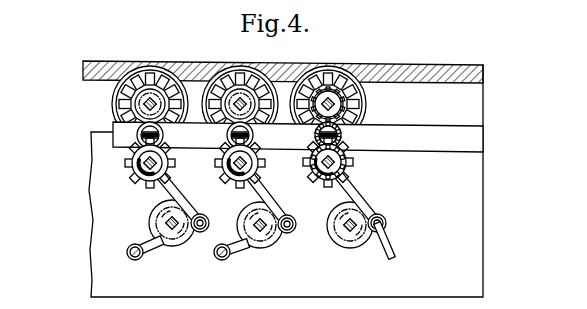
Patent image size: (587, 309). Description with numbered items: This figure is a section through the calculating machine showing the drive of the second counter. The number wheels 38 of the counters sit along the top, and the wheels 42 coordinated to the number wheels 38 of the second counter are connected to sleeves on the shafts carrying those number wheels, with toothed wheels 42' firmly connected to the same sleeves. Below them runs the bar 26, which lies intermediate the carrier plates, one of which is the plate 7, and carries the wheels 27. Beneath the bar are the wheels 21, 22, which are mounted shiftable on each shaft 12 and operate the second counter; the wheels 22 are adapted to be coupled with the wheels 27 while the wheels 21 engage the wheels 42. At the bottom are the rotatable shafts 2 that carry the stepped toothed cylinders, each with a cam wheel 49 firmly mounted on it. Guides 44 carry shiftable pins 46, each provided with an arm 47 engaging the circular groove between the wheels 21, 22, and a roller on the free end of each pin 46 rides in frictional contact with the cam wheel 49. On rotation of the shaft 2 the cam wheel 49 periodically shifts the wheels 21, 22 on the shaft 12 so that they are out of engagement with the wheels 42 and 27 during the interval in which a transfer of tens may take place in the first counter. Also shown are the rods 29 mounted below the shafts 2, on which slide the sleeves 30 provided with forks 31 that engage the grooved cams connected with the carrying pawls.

The rotatable shaft 2 is at (170, 228).
The plate 7 is at (472, 250).
The shaft 12 is at (178, 196).
The wheel 21 is at (130, 185).
The wheel 22 is at (128, 158).
The bar 26 is at (447, 145).
The wheel 27 is at (113, 135).
The rod 29 is at (235, 260).
The sleeve 30 is at (222, 260).
The fork 31 is at (145, 240).
The number wheel 38 is at (113, 90).
The wheel 42 is at (261, 90).
The toothed wheel 42' is at (217, 80).
The guide 44 is at (386, 229).
The shiftable pin 46 is at (385, 243).
The arm 47 is at (268, 197).
The cam wheel 49 is at (180, 246).